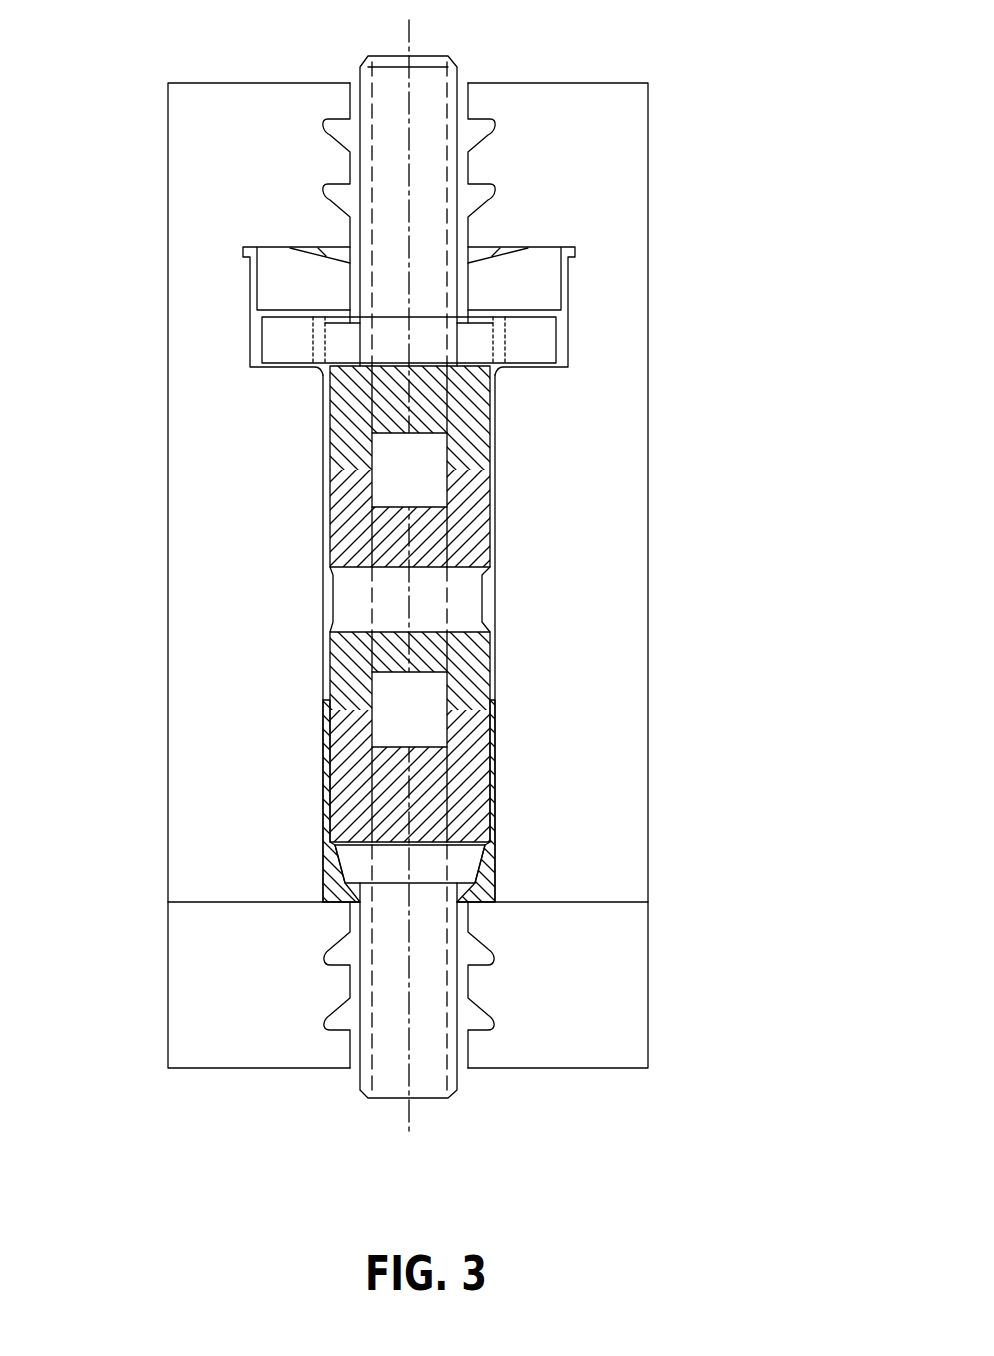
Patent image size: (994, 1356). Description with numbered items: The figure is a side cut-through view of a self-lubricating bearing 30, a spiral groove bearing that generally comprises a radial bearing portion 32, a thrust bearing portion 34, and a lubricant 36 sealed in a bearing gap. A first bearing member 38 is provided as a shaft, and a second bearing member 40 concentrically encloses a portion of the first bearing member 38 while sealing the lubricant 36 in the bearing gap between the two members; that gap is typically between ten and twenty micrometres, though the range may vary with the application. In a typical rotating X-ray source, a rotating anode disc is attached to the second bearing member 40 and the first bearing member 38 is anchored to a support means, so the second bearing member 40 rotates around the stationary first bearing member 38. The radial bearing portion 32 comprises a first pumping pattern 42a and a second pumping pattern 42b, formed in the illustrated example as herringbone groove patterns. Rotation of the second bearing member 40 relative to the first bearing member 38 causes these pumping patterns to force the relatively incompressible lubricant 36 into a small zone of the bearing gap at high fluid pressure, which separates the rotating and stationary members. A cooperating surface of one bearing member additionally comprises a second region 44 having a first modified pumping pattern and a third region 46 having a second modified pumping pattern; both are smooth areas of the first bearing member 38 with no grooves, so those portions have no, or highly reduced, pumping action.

The self-lubricating bearing 30 is at (684, 84).
The radial bearing portion 32 is at (142, 373).
The thrust bearing portion 34 is at (142, 83).
The lubricant 36 is at (334, 897).
The first bearing member 38 is at (433, 1078).
The second bearing member 40 is at (607, 870).
The first pumping pattern 42a is at (537, 748).
The second pumping pattern 42b is at (448, 438).
The second region 44 is at (427, 697).
The third region 46 is at (432, 470).